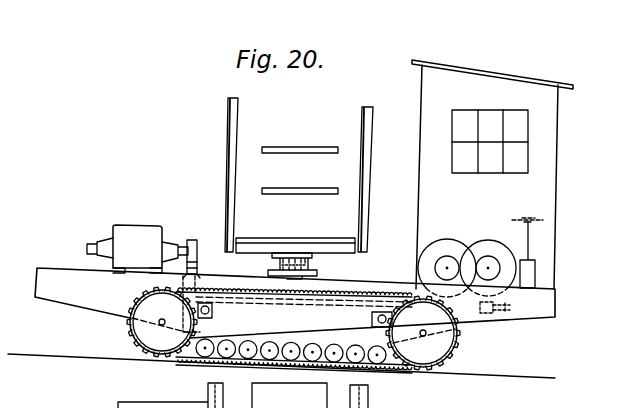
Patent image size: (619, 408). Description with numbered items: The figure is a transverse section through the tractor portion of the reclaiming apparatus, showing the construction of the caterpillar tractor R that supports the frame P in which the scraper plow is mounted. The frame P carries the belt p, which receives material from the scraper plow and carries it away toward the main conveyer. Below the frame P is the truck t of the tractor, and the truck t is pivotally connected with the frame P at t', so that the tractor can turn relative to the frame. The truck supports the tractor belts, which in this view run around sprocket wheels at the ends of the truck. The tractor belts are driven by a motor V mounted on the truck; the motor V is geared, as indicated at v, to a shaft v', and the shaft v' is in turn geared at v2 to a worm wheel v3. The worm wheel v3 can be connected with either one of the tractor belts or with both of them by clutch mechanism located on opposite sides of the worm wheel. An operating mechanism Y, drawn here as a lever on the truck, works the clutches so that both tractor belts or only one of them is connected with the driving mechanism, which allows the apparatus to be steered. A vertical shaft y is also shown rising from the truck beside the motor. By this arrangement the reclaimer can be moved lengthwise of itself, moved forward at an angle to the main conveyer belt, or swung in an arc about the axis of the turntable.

The frame P is at (222, 162).
The belt p is at (292, 147).
The tractor R is at (183, 207).
The motor V is at (130, 230).
The vertical shaft y is at (197, 233).
The gearing v is at (205, 270).
The shaft v' is at (294, 324).
The truck t is at (295, 338).
The pivotal connection t' is at (295, 260).
The operating mechanism Y is at (522, 232).
The worm wheel v3 is at (482, 252).
The gearing v2 is at (493, 313).